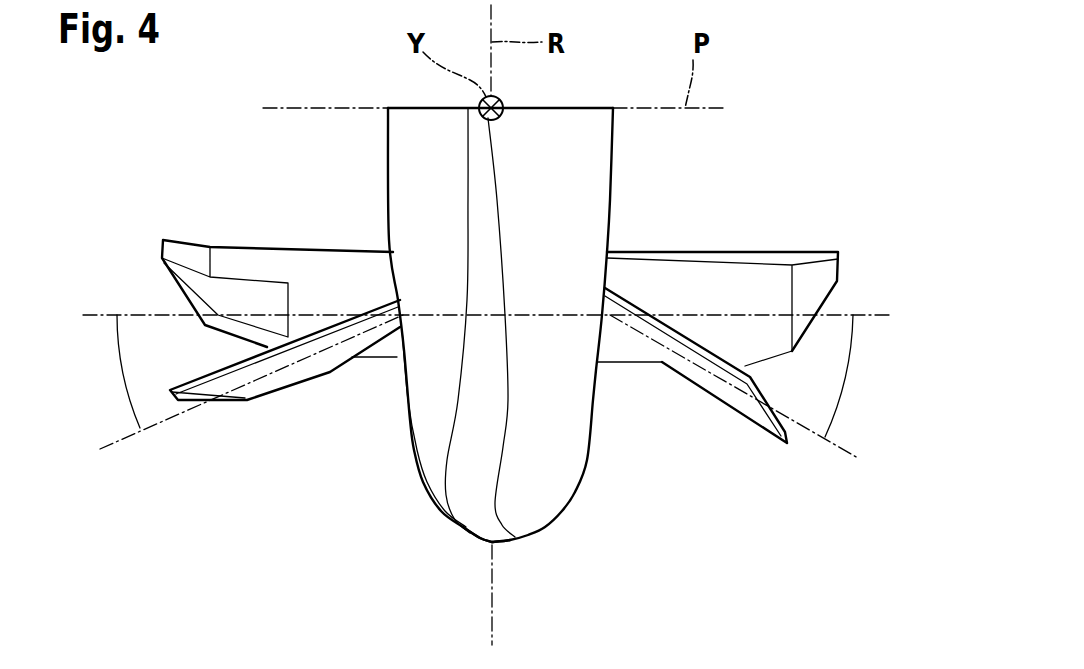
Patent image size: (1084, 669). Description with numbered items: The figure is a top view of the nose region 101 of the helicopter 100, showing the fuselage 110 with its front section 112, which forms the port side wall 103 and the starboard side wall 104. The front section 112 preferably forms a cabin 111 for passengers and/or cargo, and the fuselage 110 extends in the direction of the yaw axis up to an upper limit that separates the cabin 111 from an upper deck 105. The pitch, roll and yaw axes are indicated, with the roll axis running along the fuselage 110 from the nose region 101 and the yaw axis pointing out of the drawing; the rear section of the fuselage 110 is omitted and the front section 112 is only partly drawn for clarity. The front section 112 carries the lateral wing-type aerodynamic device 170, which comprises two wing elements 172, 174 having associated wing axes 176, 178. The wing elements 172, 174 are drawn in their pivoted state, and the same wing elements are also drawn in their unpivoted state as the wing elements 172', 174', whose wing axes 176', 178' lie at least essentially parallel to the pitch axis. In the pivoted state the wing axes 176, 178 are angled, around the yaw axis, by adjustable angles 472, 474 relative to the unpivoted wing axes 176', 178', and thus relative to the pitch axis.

The helicopter 100 is at (189, 117).
The nose region 101 is at (501, 552).
The port side wall 103 is at (613, 227).
The starboard side wall 104 is at (385, 192).
The upper deck 105 is at (507, 153).
The fuselage 110 is at (550, 133).
The cabin 111 is at (482, 406).
The front section 112 is at (393, 408).
The lateral wing-type aerodynamic device 170 is at (172, 322).
The wing element 172 is at (696, 380).
The wing element in unpivoted state 172' is at (724, 272).
The wing element 174 is at (285, 394).
The wing element in unpivoted state 174' is at (238, 261).
The wing axis 176 is at (734, 423).
The wing axis in unpivoted state 176' is at (915, 273).
The wing axis 178 is at (249, 422).
The wing axis in unpivoted state 178' is at (69, 267).
The adjustable angle 472 is at (849, 378).
The adjustable angle 474 is at (121, 382).